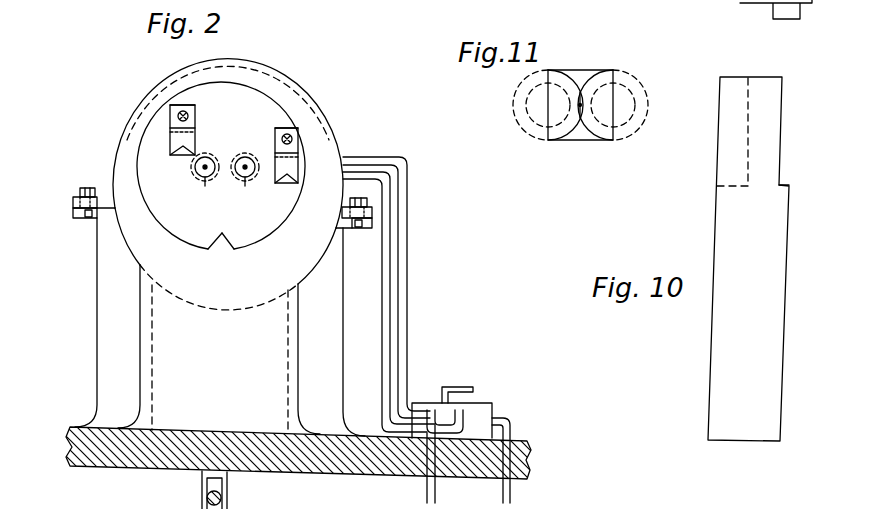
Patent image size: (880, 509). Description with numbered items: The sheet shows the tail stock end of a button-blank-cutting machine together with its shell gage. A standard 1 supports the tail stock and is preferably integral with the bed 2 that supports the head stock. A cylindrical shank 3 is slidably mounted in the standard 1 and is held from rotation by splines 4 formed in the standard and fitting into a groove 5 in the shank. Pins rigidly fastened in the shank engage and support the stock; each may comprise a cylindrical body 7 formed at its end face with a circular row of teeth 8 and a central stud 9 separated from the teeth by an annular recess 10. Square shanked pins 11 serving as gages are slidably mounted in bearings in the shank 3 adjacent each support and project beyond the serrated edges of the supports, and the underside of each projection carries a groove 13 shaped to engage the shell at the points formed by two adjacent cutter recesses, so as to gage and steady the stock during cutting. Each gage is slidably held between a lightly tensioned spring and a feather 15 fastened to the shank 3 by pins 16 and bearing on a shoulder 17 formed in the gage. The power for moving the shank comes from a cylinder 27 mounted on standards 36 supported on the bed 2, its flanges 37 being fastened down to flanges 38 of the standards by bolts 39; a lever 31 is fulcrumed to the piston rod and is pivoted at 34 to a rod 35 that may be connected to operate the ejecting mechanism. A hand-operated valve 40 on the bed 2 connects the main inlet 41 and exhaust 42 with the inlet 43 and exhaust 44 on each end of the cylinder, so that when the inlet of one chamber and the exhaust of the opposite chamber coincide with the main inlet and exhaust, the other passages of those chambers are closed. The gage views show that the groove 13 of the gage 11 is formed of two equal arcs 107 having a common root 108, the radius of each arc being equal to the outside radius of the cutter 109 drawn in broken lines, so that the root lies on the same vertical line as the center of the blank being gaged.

In FIG. 2, the standard 1 is at (224, 209).
In FIG. 2, the bed 2 is at (530, 469).
In FIG. 2, the cylindrical shank 3 is at (221, 165).
In FIG. 2, the splines 4 is at (228, 248).
In FIG. 2, the groove 5 is at (216, 244).
In FIG. 2, the cylindrical body 7 is at (225, 177).
In FIG. 2, the circular row of teeth 8 is at (246, 156).
In FIG. 2, the central stud 9 is at (207, 156).
In FIG. 2, the annular recess 10 is at (207, 170).
In FIG. 2, the square shanked pin 11 is at (171, 135).
In FIG. 11, the square shanked pin 11 is at (597, 70).
In FIG. 10, the square shanked pin 11 is at (748, 259).
In FIG. 2, the groove 13 is at (178, 152).
In FIG. 11, the groove 13 is at (578, 137).
In FIG. 10, the groove 13 is at (732, 81).
In FIG. 2, the feather 15 is at (193, 105).
In FIG. 2, the pins 16 is at (190, 116).
In FIG. 2, the shoulder 17 is at (196, 129).
In FIG. 10, the shoulder 17 is at (789, 186).
In FIG. 2, the cylinder 27 is at (119, 143).
In FIG. 2, the lever 31 is at (224, 483).
In FIG. 2, the pivot 34 is at (222, 499).
In FIG. 2, the rod 35 is at (206, 484).
In FIG. 2, the standards 36 is at (220, 327).
In FIG. 2, the flanges 37 is at (77, 201).
In FIG. 2, the flanges 38 is at (84, 219).
In FIG. 2, the bolts 39 is at (87, 187).
In FIG. 2, the hand-operated valve 40 is at (482, 411).
In FIG. 2, the main inlet 41 is at (512, 496).
In FIG. 2, the exhaust 42 is at (427, 494).
In FIG. 2, the inlet 43 is at (408, 243).
In FIG. 2, the exhaust 44 is at (388, 275).
In FIG. 11, the arcs 107 is at (589, 138).
In FIG. 11, the common root 108 is at (583, 110).
In FIG. 11, the cutter 109 is at (512, 105).